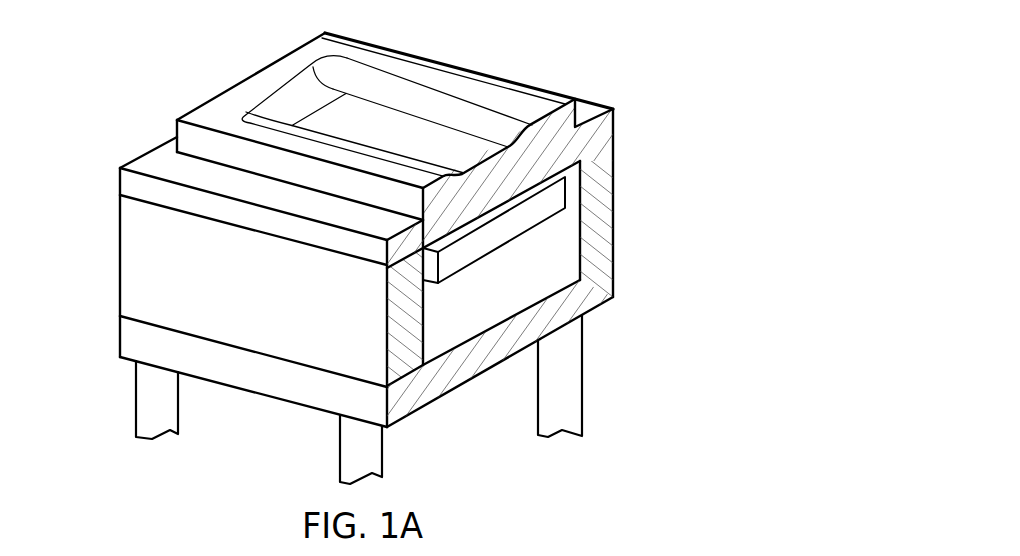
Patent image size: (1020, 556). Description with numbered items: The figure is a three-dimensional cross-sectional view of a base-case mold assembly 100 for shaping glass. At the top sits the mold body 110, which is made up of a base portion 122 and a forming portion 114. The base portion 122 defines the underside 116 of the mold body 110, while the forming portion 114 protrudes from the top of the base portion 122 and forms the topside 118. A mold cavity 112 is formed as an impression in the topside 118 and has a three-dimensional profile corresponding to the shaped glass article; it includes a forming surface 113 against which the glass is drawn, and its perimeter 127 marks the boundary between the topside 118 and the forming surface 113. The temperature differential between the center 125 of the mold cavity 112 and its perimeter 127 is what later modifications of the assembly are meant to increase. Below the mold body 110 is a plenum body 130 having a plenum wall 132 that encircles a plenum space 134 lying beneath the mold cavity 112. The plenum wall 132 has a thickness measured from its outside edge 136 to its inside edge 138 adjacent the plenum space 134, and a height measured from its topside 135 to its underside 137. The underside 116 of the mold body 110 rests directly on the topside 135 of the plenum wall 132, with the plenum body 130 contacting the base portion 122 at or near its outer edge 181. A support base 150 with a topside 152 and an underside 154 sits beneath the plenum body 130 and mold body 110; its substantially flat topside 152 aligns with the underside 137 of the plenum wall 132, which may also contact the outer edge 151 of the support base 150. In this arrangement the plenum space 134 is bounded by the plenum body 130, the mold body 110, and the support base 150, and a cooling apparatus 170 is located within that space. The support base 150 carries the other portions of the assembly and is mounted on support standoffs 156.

The mold assembly 100 is at (707, 35).
The mold body 110 is at (547, 100).
The mold cavity 112 is at (362, 105).
The forming surface 113 is at (417, 83).
The forming portion 114 is at (583, 100).
The underside 116 is at (613, 157).
The topside 118 is at (467, 75).
The base portion 122 is at (613, 127).
The center 125 is at (462, 142).
The perimeter 127 is at (287, 77).
The plenum body 130 is at (613, 228).
The plenum wall 132 is at (613, 190).
The plenum space 134 is at (556, 289).
The topside 135 is at (393, 257).
The outside edge 136 is at (387, 338).
The underside 137 is at (407, 378).
The inside edge 138 is at (424, 337).
The support base 150 is at (613, 277).
The outer edge 151 is at (387, 410).
The topside 152 is at (542, 336).
The underside 154 is at (493, 370).
The support standoffs 156 is at (338, 440).
The cooling apparatus 170 is at (476, 254).
The outer edge 181 is at (120, 180).